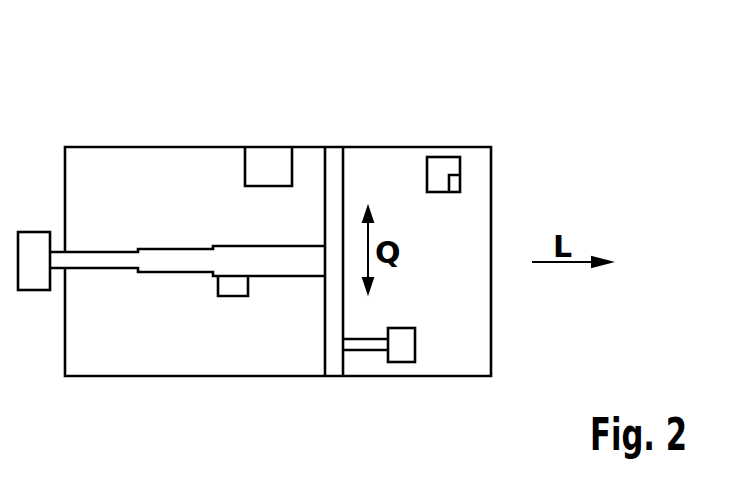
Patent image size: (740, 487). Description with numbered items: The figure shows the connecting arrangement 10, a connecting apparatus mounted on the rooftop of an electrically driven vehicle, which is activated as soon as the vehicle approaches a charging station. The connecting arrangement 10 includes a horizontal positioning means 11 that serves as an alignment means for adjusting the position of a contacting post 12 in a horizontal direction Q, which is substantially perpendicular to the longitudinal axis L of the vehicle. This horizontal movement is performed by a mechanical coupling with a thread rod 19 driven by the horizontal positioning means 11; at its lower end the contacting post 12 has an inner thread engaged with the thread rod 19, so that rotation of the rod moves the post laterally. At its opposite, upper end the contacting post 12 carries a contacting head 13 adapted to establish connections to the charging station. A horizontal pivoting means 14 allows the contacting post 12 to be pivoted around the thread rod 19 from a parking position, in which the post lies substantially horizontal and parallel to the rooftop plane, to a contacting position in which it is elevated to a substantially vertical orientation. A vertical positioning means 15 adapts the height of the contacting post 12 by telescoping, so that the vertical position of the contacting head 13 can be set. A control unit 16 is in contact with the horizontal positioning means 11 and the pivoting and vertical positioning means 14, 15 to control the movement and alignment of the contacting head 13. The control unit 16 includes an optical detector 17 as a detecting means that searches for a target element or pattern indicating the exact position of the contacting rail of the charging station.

The connecting arrangement 10 is at (547, 78).
The horizontal positioning means 11 is at (403, 350).
The contacting post 12 is at (291, 266).
The contacting head 13 is at (34, 282).
The horizontal pivoting means 14 is at (268, 160).
The vertical positioning means 15 is at (233, 290).
The control unit 16 is at (441, 160).
The optical detector 17 is at (455, 181).
The thread rod 19 is at (337, 362).